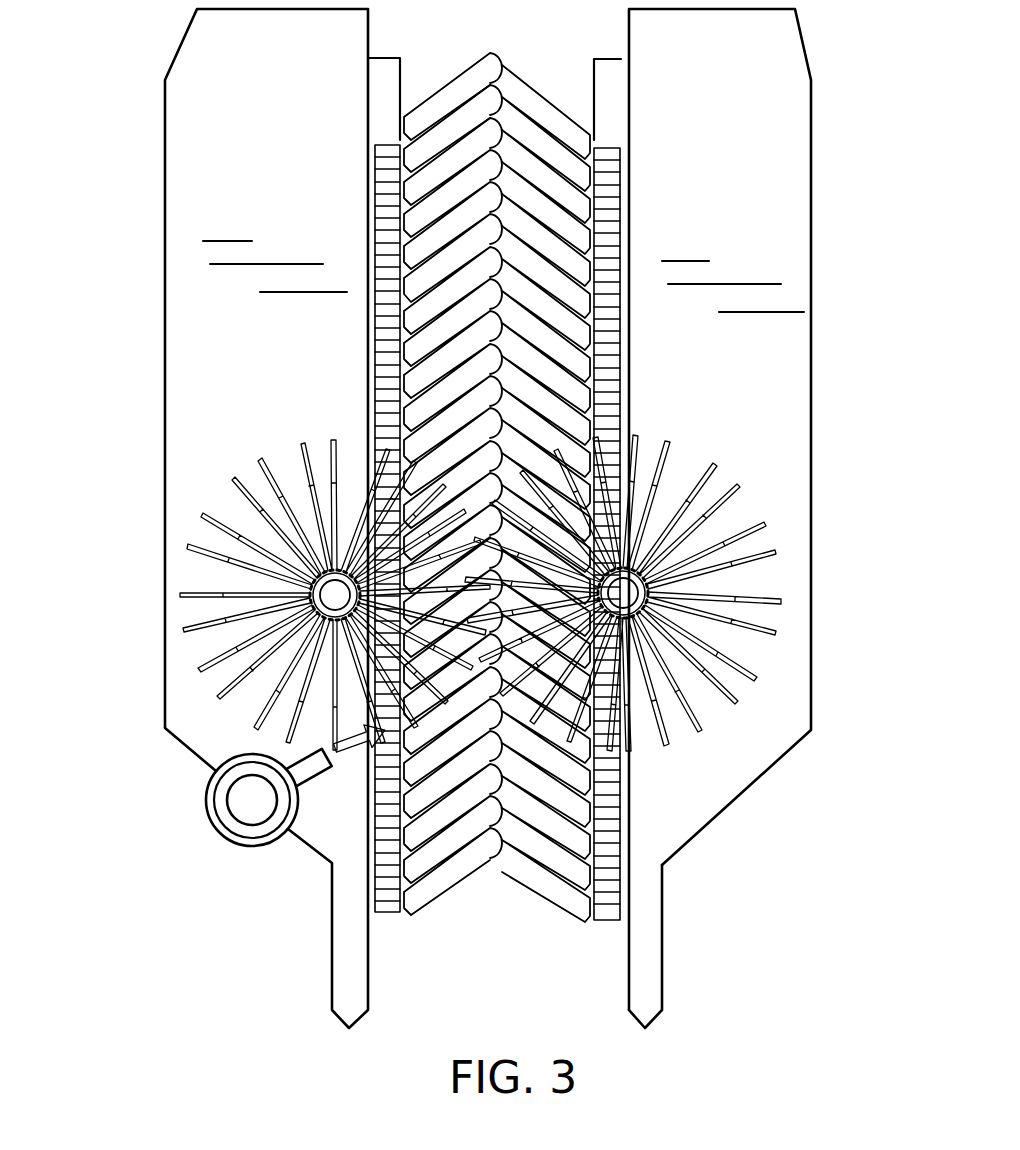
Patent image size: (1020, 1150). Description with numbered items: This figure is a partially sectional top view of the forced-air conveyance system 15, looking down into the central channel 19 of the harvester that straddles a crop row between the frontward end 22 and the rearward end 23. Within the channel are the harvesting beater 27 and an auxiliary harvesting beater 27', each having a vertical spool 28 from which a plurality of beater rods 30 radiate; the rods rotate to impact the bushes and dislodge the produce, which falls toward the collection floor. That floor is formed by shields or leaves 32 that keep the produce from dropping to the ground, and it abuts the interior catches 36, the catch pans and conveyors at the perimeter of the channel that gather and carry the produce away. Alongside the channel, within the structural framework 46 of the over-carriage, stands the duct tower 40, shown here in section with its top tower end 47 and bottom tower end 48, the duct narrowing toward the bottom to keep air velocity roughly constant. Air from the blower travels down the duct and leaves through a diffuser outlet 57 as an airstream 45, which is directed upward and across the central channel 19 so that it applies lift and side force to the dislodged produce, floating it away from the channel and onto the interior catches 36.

The forced-air conveyance system 15 is at (103, 638).
The central channel 19 is at (485, 942).
The frontward end 22 is at (648, 872).
The rearward end 23 is at (808, 85).
The harvesting beater 27 is at (296, 595).
The auxiliary harvesting beater 27' is at (671, 593).
The vertical spool 28 is at (722, 630).
The beater rods 30 is at (733, 700).
The shields or leaves 32 is at (478, 110).
The interior catches 36 is at (592, 138).
The duct tower 40 is at (250, 846).
The airstream 45 is at (351, 752).
The structural framework 46 is at (175, 470).
The top tower end 47 is at (210, 816).
The bottom tower end 48 is at (230, 792).
The diffuser outlet 57 is at (331, 762).